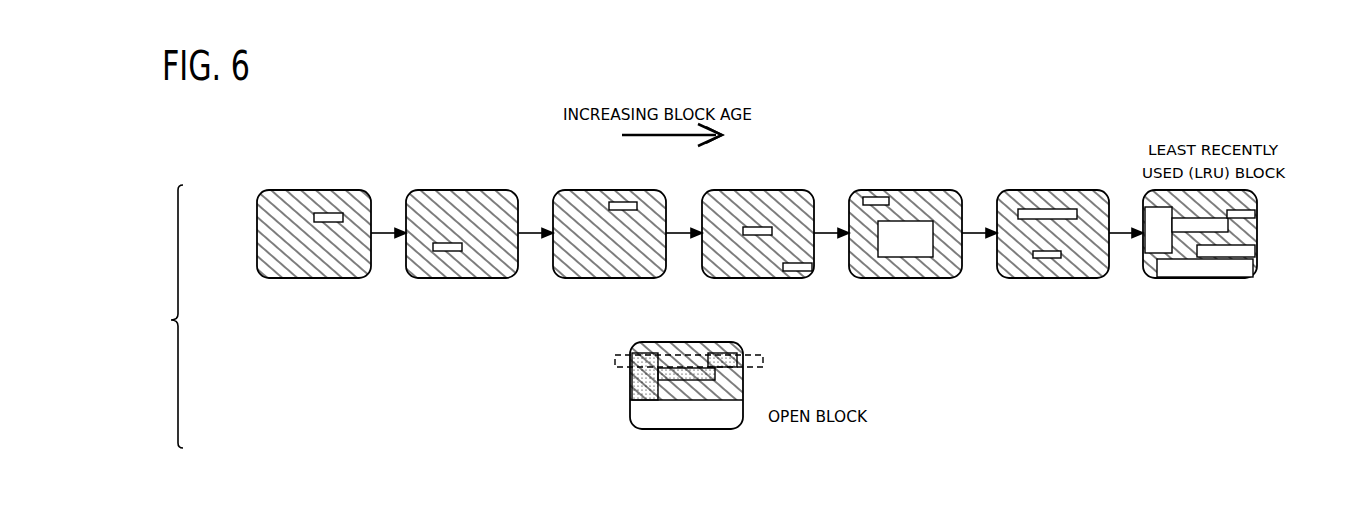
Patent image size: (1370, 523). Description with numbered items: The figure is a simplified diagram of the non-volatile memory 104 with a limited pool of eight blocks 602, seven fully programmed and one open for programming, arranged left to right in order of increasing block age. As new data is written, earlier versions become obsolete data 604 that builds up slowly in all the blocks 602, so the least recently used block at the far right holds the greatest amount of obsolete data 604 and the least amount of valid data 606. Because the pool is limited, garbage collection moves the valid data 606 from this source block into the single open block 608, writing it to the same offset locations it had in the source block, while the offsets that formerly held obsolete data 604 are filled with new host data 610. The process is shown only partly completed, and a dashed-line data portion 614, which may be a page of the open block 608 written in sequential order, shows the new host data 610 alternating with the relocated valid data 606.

The non-volatile memory 104 is at (158, 312).
The blocks 602 is at (424, 180).
The obsolete data 604 is at (447, 252).
The valid data 606 is at (945, 248).
The open block 608 is at (740, 423).
The new host data 610 is at (687, 382).
The data portion 614 is at (617, 357).